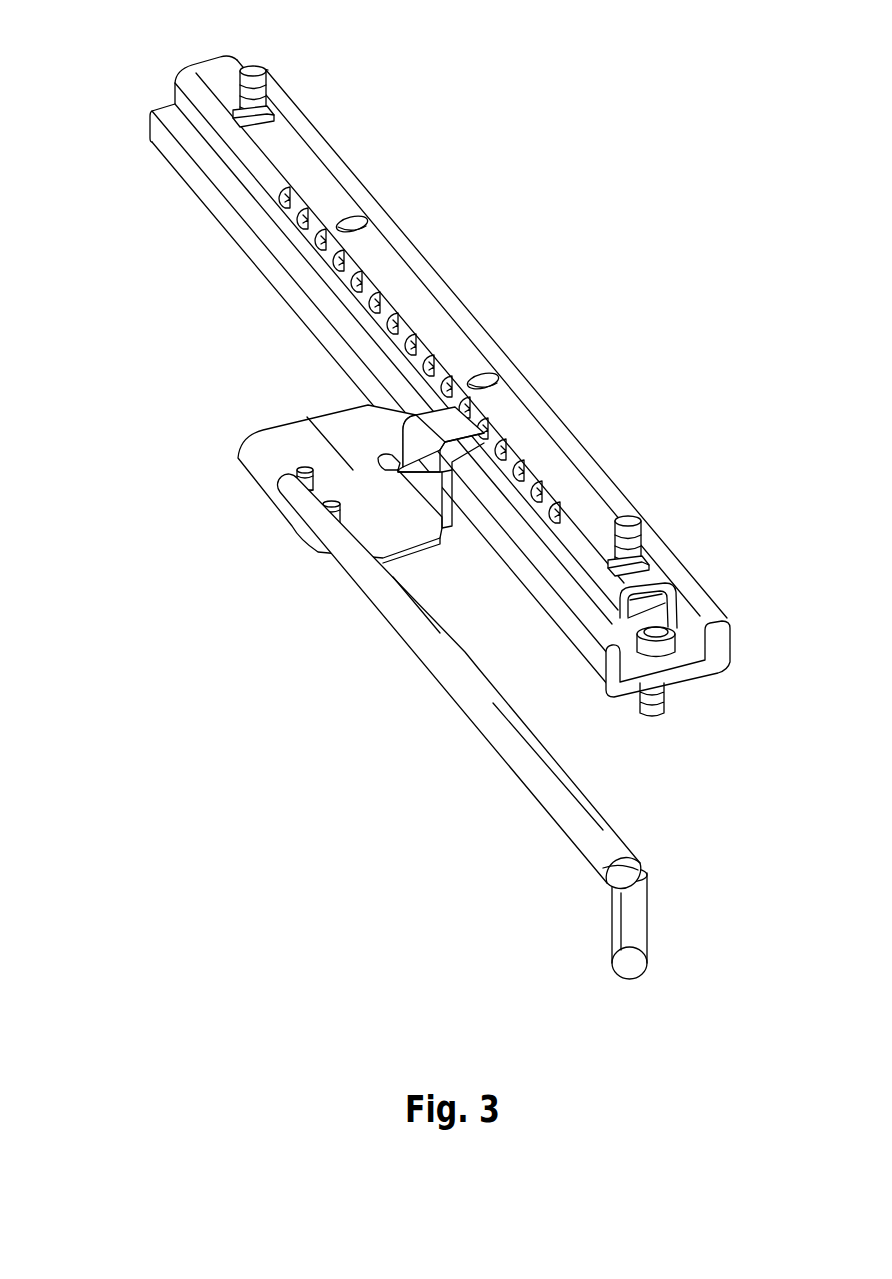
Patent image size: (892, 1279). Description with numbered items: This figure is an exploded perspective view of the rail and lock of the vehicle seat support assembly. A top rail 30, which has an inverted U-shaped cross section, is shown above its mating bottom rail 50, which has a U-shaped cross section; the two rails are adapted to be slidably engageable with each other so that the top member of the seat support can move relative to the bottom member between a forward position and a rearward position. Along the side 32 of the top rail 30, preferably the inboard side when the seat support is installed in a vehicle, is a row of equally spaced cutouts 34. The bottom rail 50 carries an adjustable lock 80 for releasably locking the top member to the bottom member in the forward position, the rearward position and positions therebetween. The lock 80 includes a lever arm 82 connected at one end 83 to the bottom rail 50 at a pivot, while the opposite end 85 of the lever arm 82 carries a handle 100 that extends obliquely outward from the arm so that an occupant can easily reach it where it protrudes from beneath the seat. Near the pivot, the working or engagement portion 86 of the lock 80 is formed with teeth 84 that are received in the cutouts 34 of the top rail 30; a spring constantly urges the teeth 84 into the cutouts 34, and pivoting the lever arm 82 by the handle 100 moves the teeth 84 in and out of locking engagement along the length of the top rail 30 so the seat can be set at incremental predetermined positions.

The top rail 30 is at (301, 152).
The side 32 is at (178, 70).
The cutouts 34 is at (550, 512).
The bottom rail 50 is at (693, 570).
The adjustable lock 80 is at (457, 648).
The lever arm 82 is at (490, 745).
The end of the lever arm 83 is at (293, 510).
The teeth 84 is at (468, 408).
The end of the lever arm 85 is at (630, 847).
The working portion 86 is at (437, 407).
The handle 100 is at (647, 920).